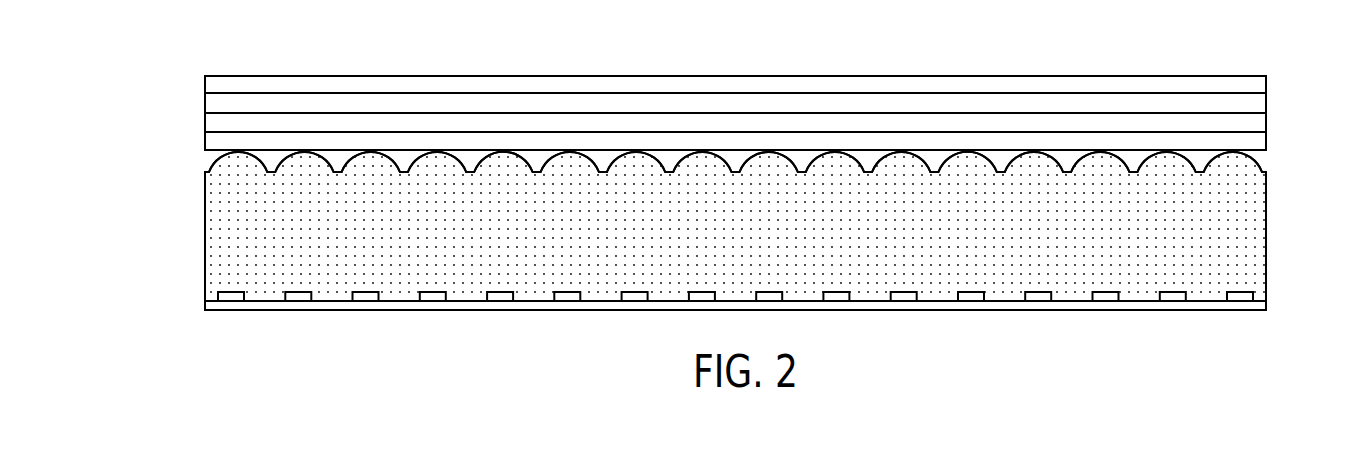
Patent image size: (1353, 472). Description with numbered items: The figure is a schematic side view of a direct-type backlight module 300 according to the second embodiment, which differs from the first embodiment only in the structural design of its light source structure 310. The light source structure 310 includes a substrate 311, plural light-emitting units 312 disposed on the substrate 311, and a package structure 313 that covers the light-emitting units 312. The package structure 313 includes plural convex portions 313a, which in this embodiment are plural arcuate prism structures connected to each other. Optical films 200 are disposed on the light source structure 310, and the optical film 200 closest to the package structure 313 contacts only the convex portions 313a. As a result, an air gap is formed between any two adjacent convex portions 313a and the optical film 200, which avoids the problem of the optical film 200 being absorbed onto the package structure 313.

The backlight module 300 is at (97, 28).
The optical films 200 is at (192, 77).
The light source structure 310 is at (702, 255).
The substrate 311 is at (333, 311).
The light-emitting units 312 is at (290, 292).
The package structure 313 is at (1252, 233).
The convex portions 313a is at (1233, 161).